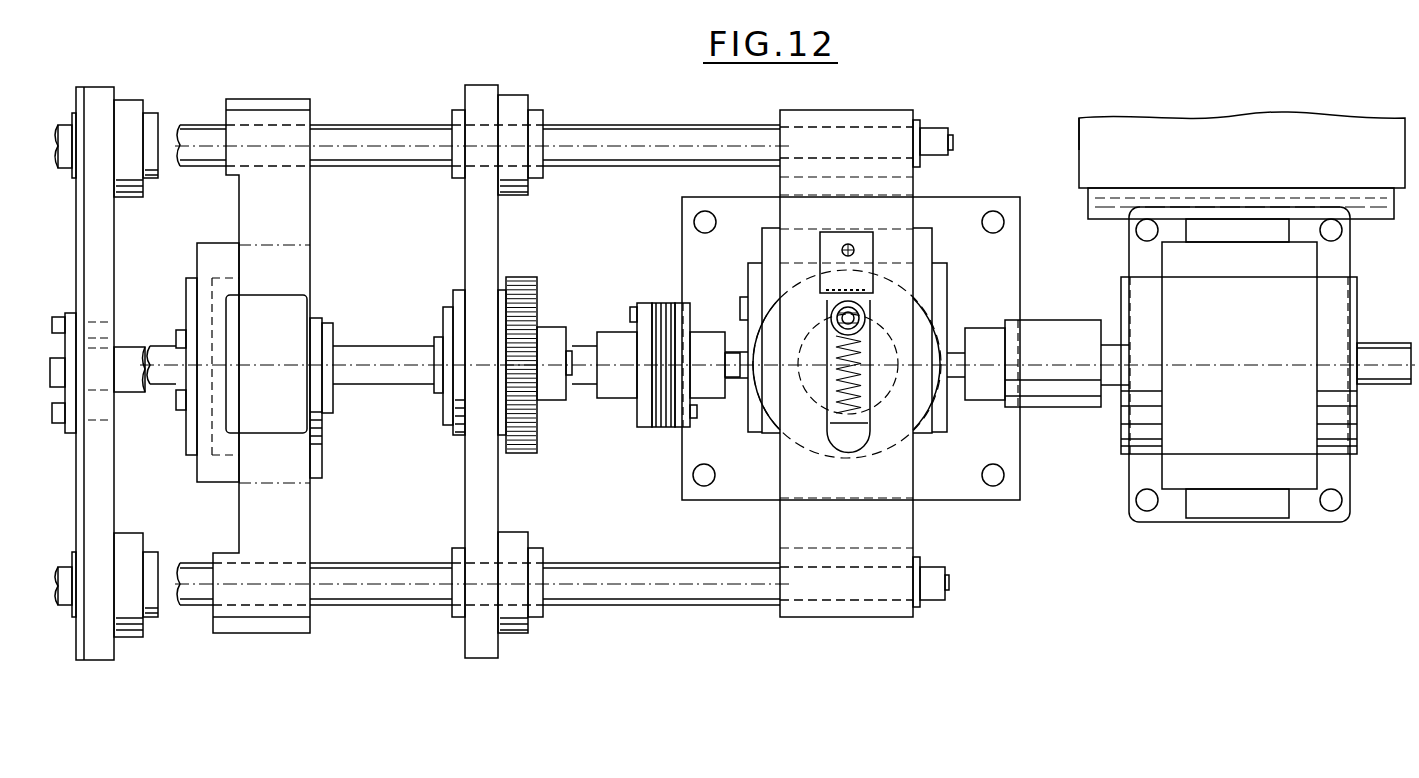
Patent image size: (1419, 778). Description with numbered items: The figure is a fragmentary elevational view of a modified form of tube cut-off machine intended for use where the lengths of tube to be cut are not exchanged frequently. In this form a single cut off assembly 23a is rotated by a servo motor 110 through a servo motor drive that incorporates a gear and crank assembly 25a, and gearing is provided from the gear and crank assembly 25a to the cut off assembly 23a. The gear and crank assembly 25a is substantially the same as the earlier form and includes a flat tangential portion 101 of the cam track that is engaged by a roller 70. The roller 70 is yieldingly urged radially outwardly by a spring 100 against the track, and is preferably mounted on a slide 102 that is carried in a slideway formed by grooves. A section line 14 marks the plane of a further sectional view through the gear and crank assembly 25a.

The section line 14- 14 is at (862, 75).
The cut off assembly 23a is at (298, 385).
The gear and crank assembly 25a is at (928, 433).
The roller 70 is at (866, 322).
The spring 100 is at (759, 432).
The flat tangential portion 101 is at (866, 306).
The slide 102 is at (765, 318).
The servo motor 110 is at (1223, 133).